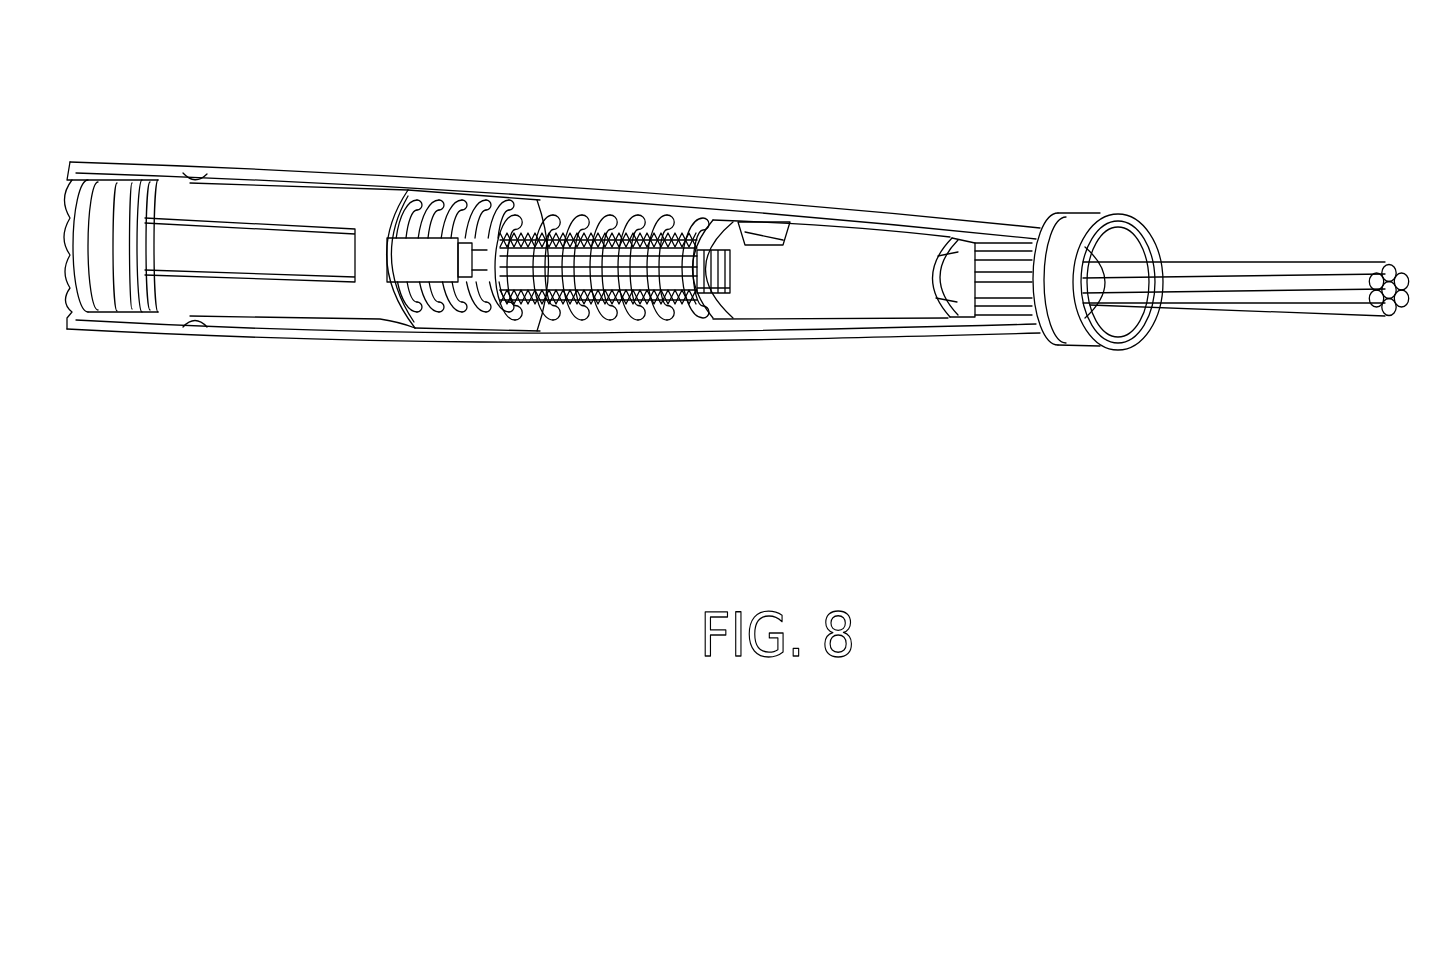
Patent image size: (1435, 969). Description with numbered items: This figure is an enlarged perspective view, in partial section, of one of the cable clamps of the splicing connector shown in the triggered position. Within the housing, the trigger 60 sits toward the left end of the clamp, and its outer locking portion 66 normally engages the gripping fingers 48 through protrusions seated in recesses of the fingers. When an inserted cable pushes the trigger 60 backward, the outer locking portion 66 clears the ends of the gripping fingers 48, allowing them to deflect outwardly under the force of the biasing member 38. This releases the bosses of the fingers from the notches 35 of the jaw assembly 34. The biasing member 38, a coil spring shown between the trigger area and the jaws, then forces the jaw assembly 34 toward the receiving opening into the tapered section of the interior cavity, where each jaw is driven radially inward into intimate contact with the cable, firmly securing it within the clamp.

The trigger 60 is at (331, 187).
The outer locking portion 66 is at (407, 191).
The biasing member 38 is at (615, 217).
The jaw assembly 34 is at (863, 257).
The notches 35 is at (727, 277).
The gripping fingers 48 is at (287, 253).